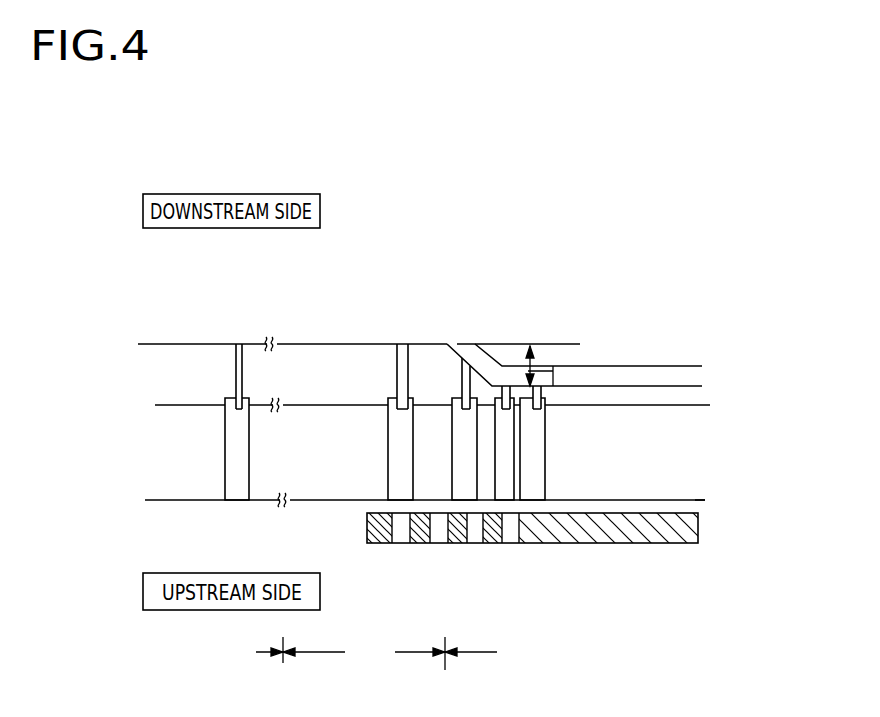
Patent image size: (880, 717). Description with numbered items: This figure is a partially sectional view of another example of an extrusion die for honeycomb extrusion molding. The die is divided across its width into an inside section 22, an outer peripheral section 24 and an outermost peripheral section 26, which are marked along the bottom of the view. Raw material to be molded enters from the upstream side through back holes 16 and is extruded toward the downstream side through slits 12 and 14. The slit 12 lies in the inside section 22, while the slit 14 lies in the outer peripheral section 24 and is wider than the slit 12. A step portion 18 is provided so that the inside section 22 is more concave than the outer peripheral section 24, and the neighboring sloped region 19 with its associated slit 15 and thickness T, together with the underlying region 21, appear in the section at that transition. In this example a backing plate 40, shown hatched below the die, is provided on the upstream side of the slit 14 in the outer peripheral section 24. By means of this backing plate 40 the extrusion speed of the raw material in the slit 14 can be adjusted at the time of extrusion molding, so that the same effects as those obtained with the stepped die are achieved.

The slit 12 is at (238, 343).
The slit 14 is at (406, 348).
The electrode 15 is at (508, 387).
The back hole 16 is at (237, 483).
The step portion 18 is at (441, 348).
The stepped insulating layer 19 is at (477, 345).
The substrate 21 is at (716, 484).
The inside section 22 is at (252, 654).
The outer peripheral section 24 is at (364, 654).
The outermost peripheral section 26 is at (490, 655).
The backing plate 40 is at (547, 553).
The thickness T is at (558, 371).